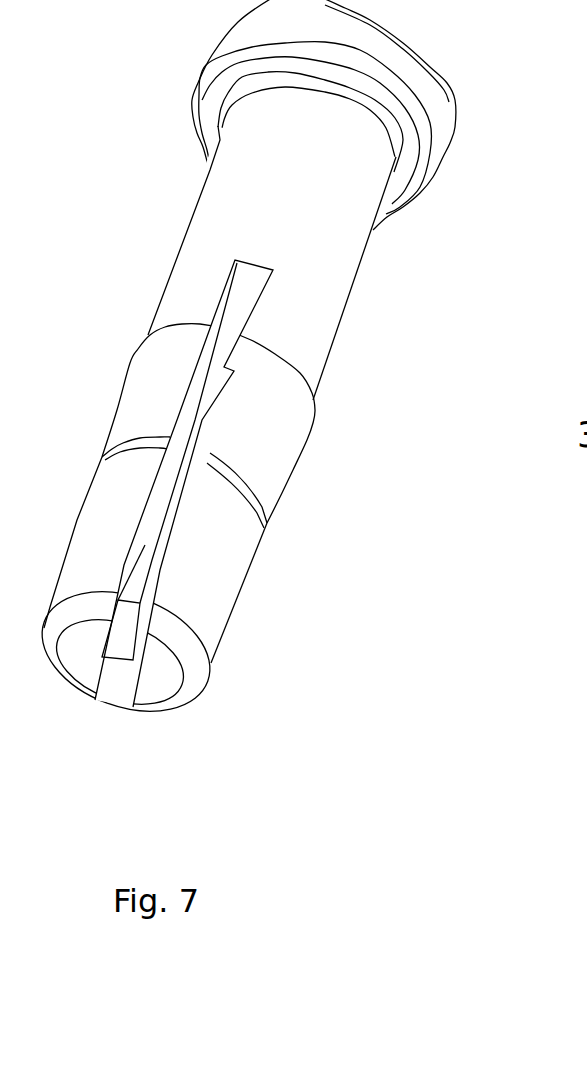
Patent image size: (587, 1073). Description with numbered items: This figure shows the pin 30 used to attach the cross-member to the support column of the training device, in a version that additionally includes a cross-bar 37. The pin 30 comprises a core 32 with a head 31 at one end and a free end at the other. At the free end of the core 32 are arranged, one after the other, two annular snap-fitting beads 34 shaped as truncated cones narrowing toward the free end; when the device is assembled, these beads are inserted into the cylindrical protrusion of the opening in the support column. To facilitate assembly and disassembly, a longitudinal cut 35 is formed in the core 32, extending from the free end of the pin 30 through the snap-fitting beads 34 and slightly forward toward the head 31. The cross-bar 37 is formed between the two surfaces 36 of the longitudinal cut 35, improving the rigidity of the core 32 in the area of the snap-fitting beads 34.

The pin 30 is at (306, 380).
The head 31 is at (398, 68).
The core 32 is at (285, 213).
The annular snap-fitting beads 34 is at (273, 437).
The longitudinal cut 35 is at (306, 608).
The surfaces of the longitudinal cut 36 is at (200, 383).
The cross-bar 37 is at (127, 637).